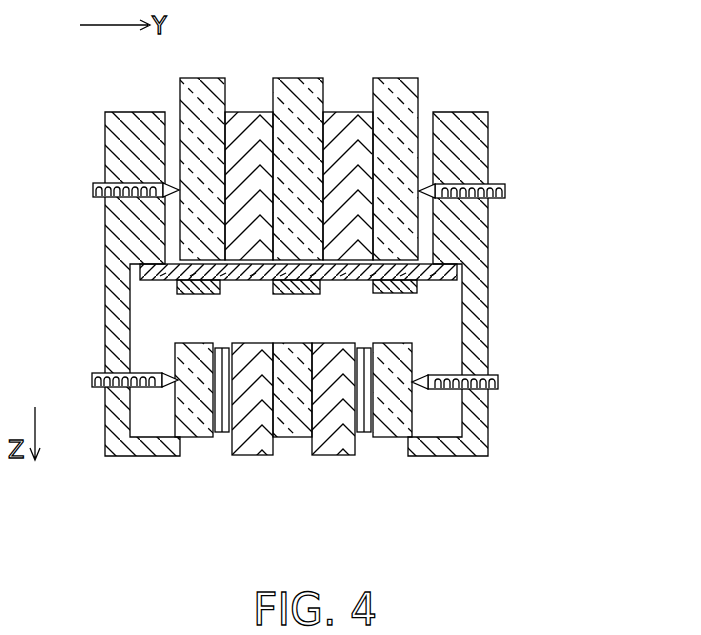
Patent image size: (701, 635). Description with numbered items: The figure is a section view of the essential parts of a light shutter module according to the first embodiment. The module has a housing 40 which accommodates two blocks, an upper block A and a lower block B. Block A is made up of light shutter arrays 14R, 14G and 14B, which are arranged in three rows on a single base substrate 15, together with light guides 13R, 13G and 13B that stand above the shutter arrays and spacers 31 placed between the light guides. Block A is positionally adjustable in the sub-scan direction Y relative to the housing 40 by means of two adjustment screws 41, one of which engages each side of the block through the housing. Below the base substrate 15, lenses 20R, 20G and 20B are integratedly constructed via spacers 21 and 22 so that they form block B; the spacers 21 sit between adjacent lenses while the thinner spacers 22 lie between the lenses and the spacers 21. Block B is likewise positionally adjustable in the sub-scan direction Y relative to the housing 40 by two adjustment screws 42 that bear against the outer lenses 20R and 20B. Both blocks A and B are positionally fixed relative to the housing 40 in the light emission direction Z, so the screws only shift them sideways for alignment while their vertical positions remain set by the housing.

The light guide 13R is at (209, 78).
The light guide 13G is at (307, 78).
The light guide 13B is at (408, 78).
The spacer 31 is at (247, 112).
The adjustment screw 41 is at (98, 184).
The housing 40 is at (488, 242).
The base substrate 15 is at (138, 291).
The light shutter array 14R is at (178, 294).
The light shutter array 14G is at (294, 295).
The light shutter array 14B is at (407, 296).
The adjustment screw 42 is at (88, 378).
The lens 20R is at (200, 437).
The lens 20G is at (290, 437).
The lens 20B is at (390, 437).
The spacer 21 is at (258, 455).
The spacer 22 is at (222, 437).
The block A is at (440, 86).
The block B is at (427, 351).